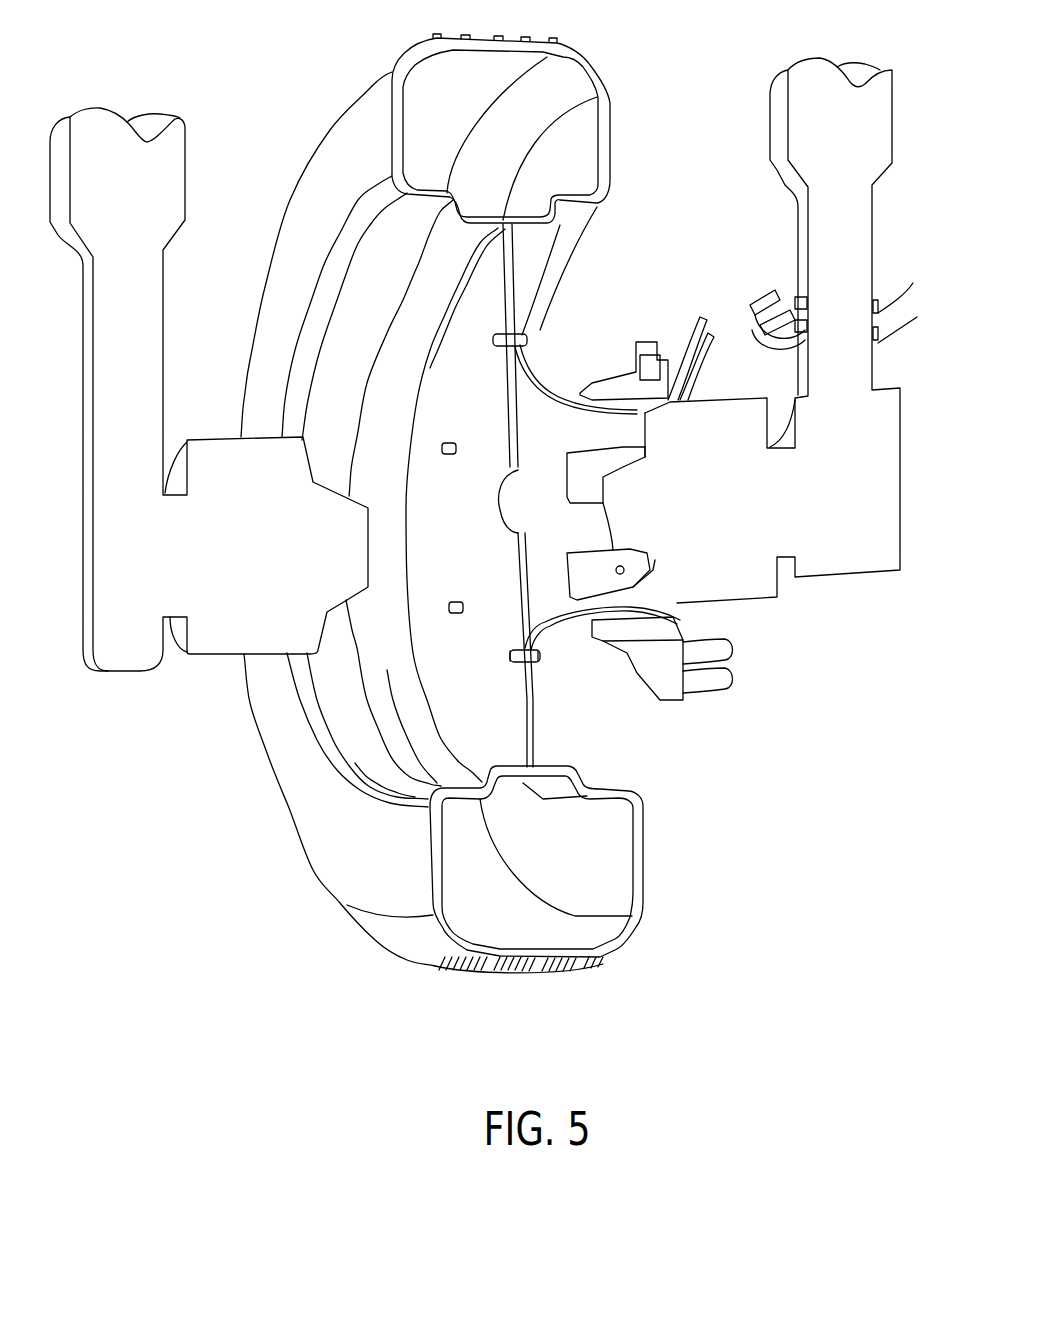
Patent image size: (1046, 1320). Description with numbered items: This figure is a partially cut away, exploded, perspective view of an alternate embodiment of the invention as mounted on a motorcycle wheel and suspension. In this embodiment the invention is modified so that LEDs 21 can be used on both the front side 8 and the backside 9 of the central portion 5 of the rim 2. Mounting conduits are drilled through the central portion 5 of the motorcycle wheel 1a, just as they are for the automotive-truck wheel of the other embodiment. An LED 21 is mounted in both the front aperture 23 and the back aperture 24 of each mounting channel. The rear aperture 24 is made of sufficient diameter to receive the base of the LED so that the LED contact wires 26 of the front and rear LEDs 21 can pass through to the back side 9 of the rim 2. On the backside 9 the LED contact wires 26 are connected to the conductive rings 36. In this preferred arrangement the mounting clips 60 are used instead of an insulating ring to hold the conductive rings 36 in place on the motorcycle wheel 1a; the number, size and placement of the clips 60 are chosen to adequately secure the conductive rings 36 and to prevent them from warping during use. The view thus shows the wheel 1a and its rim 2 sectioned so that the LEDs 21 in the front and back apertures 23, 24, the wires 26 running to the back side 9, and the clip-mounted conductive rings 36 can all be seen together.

The motorcycle wheel 1a is at (650, 867).
The rim 2 is at (400, 794).
The central portion 5 is at (507, 737).
The front side 8 is at (463, 717).
The backside 9 is at (533, 727).
The LED 21 is at (530, 336).
The front aperture 23 is at (519, 664).
The back aperture 24 is at (536, 664).
The LED contact wire 26 is at (555, 395).
The conductive ring 36 is at (733, 647).
The mounting clip 60 is at (647, 340).